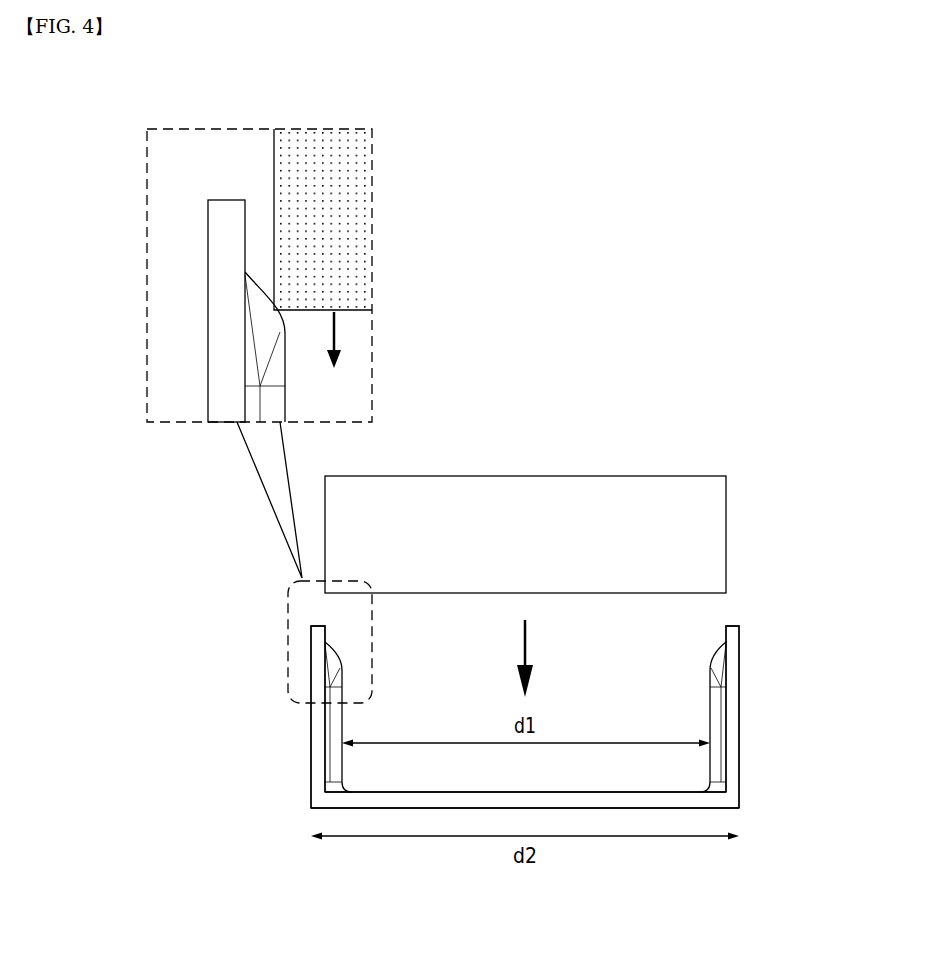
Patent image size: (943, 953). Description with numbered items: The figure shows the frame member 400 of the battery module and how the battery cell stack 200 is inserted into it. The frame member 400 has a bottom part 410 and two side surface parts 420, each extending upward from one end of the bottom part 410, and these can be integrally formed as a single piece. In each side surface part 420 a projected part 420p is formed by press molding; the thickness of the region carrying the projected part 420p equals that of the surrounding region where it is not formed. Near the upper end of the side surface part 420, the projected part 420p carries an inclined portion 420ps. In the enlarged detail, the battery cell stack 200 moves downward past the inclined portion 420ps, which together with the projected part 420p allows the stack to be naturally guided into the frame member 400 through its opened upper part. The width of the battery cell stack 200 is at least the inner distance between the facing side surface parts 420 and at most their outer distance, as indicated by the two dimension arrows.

The battery cell stack 200 is at (353, 205).
The frame member 400 is at (765, 640).
The bottom part 410 is at (440, 798).
The side surface part 420 is at (225, 343).
The projected part 420p is at (277, 299).
The inclined portion 420ps is at (262, 282).